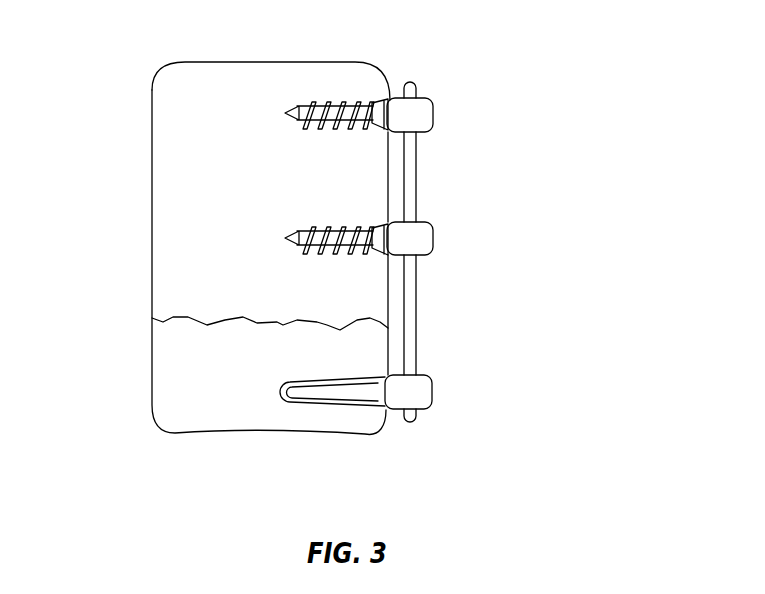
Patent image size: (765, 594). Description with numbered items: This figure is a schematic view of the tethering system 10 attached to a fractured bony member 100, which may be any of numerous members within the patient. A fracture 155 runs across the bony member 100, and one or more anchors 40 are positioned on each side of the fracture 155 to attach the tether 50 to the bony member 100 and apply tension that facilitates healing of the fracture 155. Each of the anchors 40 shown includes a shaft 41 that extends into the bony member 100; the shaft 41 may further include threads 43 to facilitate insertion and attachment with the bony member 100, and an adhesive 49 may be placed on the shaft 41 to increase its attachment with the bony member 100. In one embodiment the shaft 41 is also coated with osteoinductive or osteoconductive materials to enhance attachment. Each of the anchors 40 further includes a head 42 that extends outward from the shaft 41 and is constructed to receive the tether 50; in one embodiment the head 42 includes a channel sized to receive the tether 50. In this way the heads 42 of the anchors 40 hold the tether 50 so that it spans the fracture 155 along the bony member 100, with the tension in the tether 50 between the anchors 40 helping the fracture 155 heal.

The tethering system 10 is at (592, 205).
The anchor 40 is at (468, 125).
The shaft 41 is at (357, 127).
The head 42 is at (433, 110).
The threads 43 is at (330, 130).
The adhesive 49 is at (320, 404).
The tether 50 is at (412, 172).
The bony member 100 is at (180, 117).
The fracture 155 is at (200, 322).